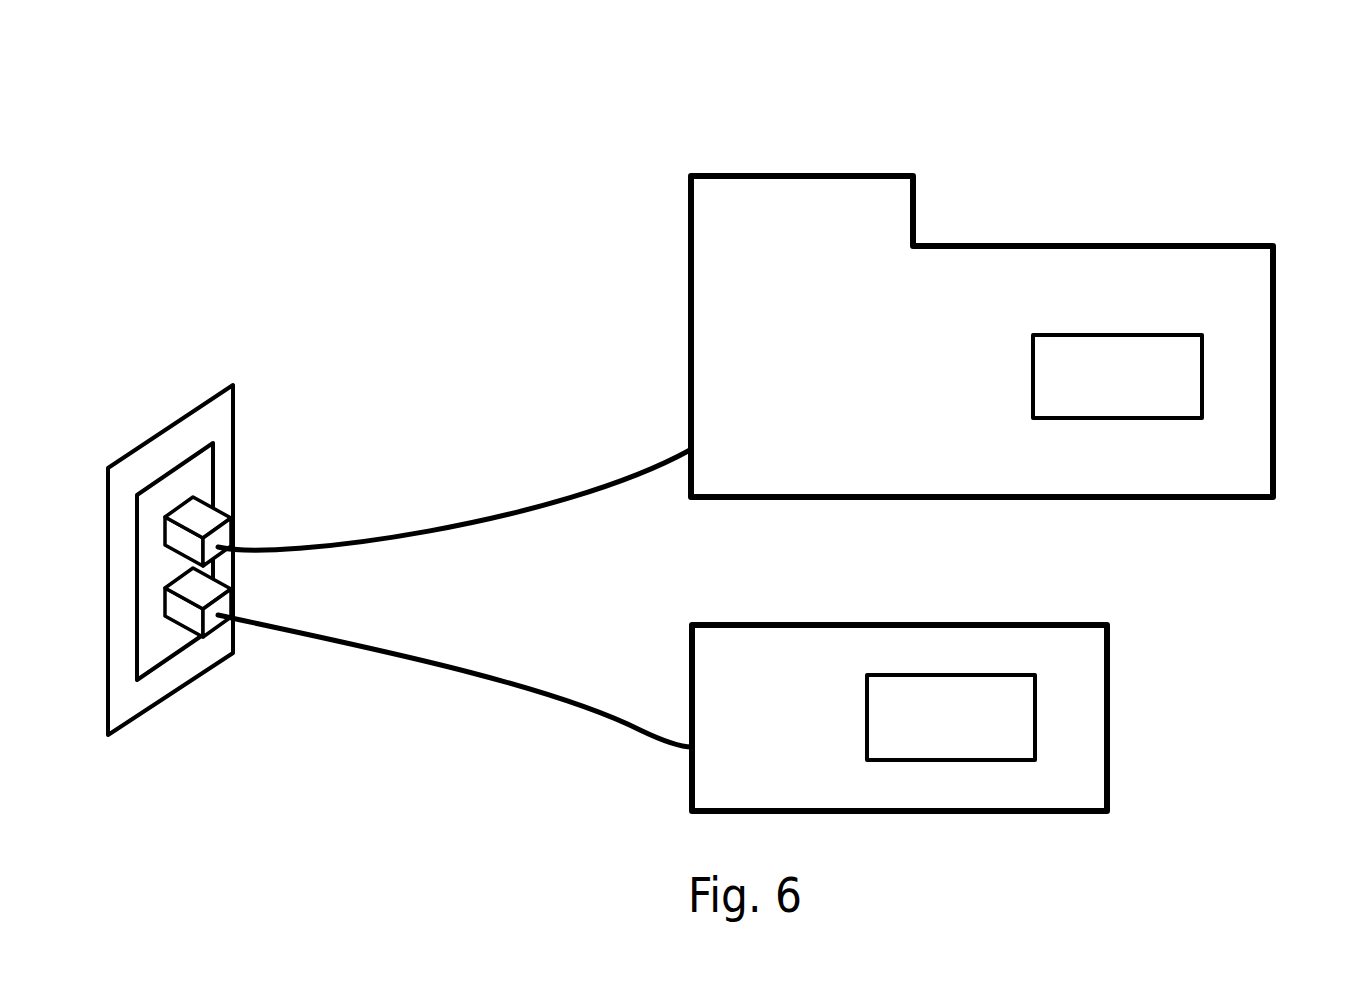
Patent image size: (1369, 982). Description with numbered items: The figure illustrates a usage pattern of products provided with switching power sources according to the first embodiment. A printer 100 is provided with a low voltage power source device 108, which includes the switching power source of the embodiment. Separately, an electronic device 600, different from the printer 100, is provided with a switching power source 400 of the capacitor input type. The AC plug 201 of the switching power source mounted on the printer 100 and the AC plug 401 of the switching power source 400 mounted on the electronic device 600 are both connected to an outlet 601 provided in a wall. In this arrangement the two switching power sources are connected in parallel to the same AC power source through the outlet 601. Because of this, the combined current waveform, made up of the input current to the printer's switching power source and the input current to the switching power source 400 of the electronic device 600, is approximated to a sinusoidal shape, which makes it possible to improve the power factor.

The printer 100 is at (1053, 233).
The low voltage power source device 108 is at (1203, 372).
The AC plug 201 is at (203, 517).
The switching power source 400 is at (1037, 739).
The AC plug 401 is at (188, 620).
The electronic device 600 is at (1110, 647).
The outlet 601 is at (158, 400).